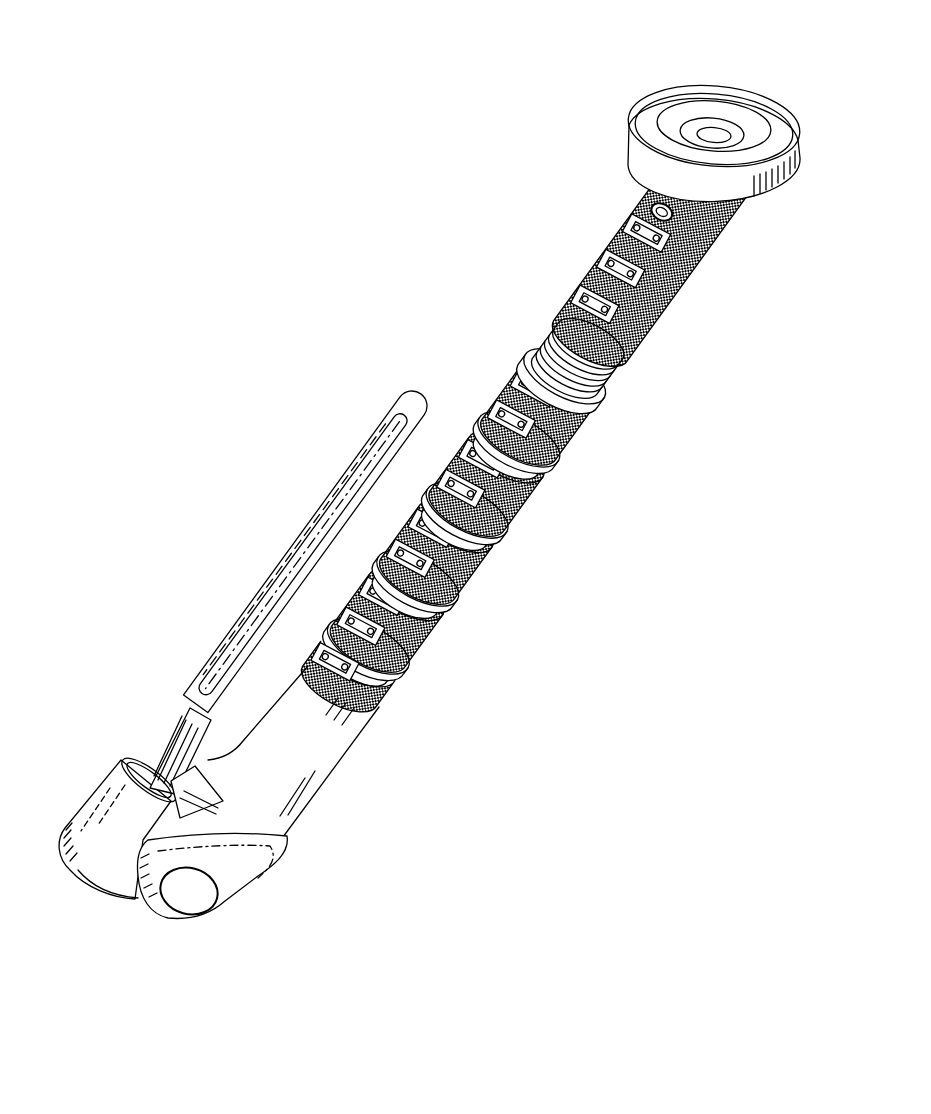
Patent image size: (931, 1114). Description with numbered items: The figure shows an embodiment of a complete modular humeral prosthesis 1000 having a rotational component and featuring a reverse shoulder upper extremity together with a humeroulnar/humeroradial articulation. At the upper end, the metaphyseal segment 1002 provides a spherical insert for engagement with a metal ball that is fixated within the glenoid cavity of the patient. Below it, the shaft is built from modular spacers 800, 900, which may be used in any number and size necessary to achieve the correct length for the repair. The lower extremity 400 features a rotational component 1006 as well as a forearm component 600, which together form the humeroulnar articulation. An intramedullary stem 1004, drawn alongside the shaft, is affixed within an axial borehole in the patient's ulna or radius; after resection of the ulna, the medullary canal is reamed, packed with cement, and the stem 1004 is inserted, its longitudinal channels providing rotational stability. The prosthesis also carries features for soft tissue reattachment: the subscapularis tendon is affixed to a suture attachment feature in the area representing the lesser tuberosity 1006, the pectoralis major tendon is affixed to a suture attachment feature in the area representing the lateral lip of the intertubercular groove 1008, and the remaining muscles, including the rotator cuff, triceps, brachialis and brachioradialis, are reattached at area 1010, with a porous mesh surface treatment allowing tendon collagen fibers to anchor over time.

The complete modular humeral prosthesis 1000 is at (540, 53).
The metaphyseal segment 1002 is at (735, 213).
The intramedullary stem 1004 is at (318, 511).
The rotational component 1006 is at (630, 212).
The lateral lip of intertubercular groove area 1008 is at (511, 358).
The muscle reattachment area 1010 is at (520, 500).
The modular spacer 800 is at (560, 440).
The modular spacer 900 is at (455, 582).
The lower extremity 400 is at (318, 785).
The forearm component 600 is at (98, 772).